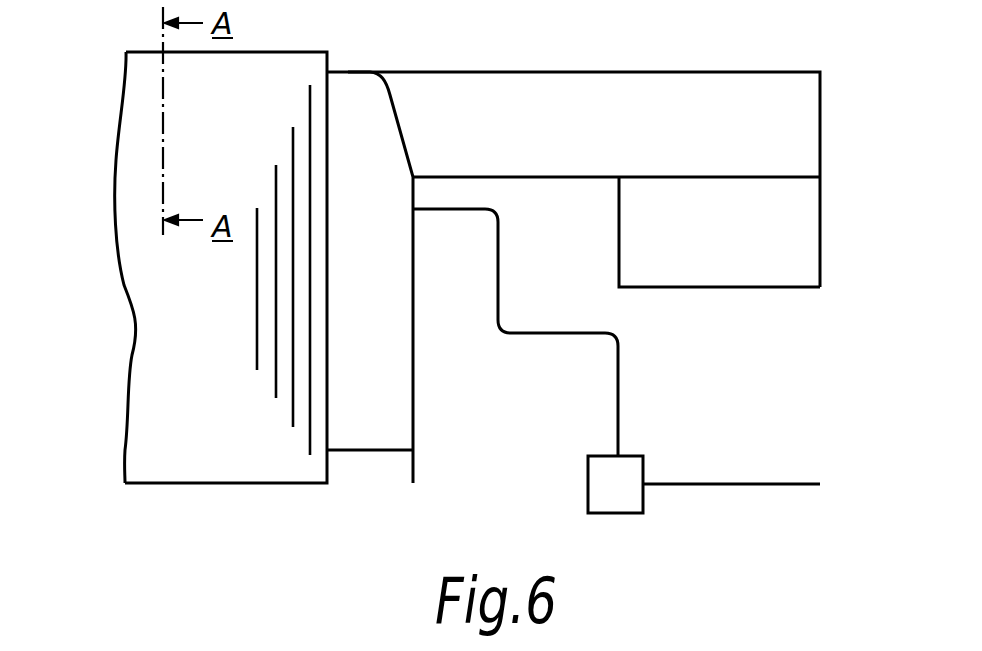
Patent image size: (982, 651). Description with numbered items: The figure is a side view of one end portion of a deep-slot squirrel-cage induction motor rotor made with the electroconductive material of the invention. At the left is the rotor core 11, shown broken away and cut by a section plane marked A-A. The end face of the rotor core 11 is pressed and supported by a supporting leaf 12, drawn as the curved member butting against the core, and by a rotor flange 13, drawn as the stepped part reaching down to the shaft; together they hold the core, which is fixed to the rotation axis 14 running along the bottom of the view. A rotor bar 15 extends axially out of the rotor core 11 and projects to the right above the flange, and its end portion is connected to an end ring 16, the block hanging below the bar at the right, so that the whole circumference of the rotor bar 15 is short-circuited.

The rotor core 11 is at (128, 365).
The supporting leaf 12 is at (352, 70).
The rotor flange 13 is at (621, 393).
The rotation axis 14 is at (710, 484).
The rotor bar 15 is at (618, 72).
The end ring 16 is at (822, 242).